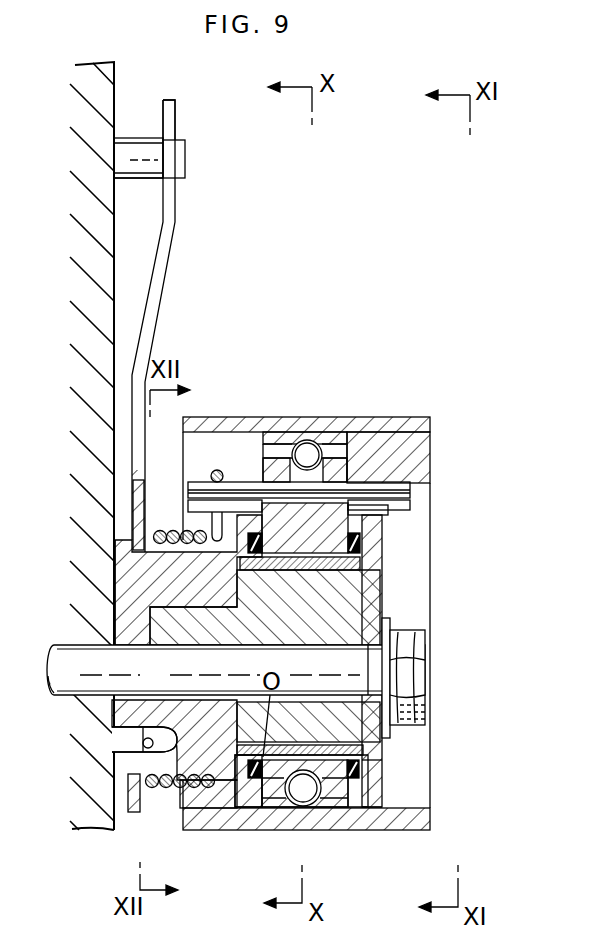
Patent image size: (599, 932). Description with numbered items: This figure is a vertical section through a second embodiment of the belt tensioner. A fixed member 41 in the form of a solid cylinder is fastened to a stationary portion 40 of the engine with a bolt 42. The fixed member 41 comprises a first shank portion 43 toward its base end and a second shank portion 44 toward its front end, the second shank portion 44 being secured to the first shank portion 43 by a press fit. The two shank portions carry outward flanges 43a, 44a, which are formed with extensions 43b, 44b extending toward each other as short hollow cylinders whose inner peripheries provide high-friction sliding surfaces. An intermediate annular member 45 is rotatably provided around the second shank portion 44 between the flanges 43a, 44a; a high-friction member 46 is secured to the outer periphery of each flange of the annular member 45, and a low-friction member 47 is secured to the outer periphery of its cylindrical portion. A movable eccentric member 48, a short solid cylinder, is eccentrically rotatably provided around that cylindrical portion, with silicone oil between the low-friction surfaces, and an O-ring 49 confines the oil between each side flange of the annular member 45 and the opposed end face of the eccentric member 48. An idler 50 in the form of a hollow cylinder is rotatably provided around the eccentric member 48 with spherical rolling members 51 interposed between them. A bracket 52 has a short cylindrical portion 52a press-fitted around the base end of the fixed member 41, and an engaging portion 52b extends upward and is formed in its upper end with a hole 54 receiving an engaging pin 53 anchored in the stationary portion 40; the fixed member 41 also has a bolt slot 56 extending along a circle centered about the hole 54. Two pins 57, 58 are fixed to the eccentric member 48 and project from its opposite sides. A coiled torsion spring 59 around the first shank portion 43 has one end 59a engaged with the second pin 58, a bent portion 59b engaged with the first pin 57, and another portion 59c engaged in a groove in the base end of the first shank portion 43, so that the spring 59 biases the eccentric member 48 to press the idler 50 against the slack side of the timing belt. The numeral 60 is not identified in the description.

The stationary portion 40 is at (116, 67).
The fixed member 41 is at (115, 568).
The bolt 42 is at (425, 680).
The first shank portion 43 is at (115, 607).
The outward flange 43a is at (137, 800).
The extension 43b is at (215, 808).
The second shank portion 44 is at (380, 612).
The outward flange 44a is at (385, 770).
The extension 44b is at (372, 807).
The intermediate annular member 45 is at (363, 616).
The high-friction member 46 is at (363, 793).
The low-friction member 47 is at (327, 560).
The movable eccentric member 48 is at (345, 475).
The O-ring 49 is at (361, 545).
The idler 50 is at (400, 425).
The spherical rolling members 51 is at (303, 806).
The bracket 52 is at (163, 253).
The short cylindrical portion 52a is at (130, 540).
The engaging portion 52b is at (176, 108).
The engaging pin 53 is at (186, 158).
The hole 54 is at (163, 180).
The bolt slot 56 is at (366, 682).
The first pin 57 is at (410, 490).
The second pin 58 is at (410, 515).
The coiled torsion spring 59 is at (173, 544).
The spring end 59a is at (217, 543).
The bent portion 59b is at (217, 470).
The other spring portion 59c is at (153, 742).
The groove 60 is at (123, 748).